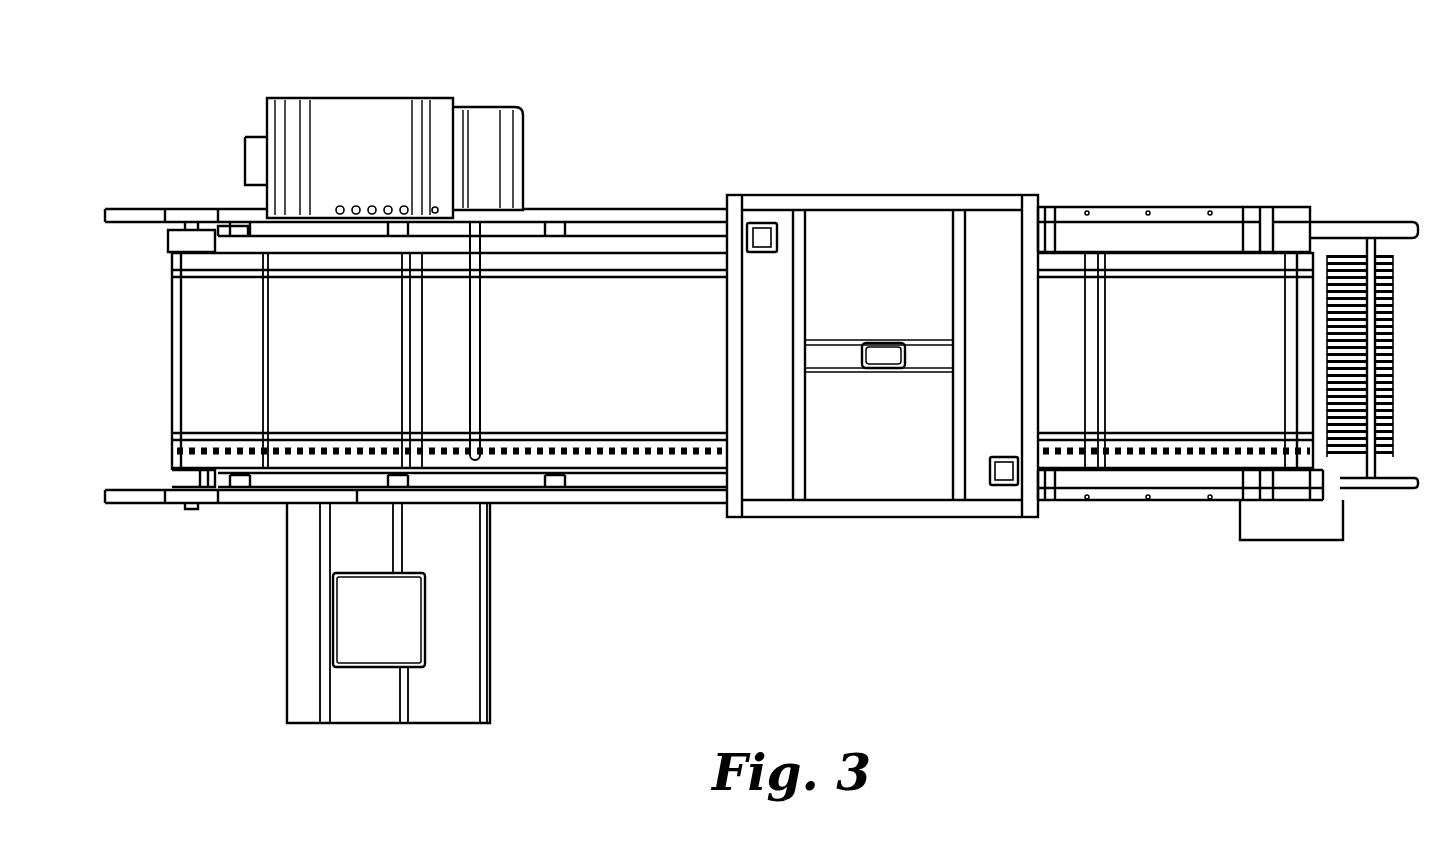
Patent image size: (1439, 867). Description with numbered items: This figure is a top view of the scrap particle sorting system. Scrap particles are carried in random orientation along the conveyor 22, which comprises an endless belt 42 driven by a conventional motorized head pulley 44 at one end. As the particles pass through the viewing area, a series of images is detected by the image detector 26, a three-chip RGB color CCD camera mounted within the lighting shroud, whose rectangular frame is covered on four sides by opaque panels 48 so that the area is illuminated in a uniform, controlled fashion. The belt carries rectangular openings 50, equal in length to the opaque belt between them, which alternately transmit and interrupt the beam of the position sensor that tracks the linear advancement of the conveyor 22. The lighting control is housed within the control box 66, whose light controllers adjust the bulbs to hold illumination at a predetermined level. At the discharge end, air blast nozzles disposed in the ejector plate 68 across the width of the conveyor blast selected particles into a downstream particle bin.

The conveyor 22 is at (548, 312).
The image detector 26 is at (876, 343).
The endless belt 42 is at (1120, 252).
The motorized head pulley 44 is at (1297, 232).
The opaque panels 48 is at (882, 319).
The rectangular openings 50 is at (1180, 455).
The control box 66 is at (395, 110).
The ejector plate 68 is at (1378, 245).